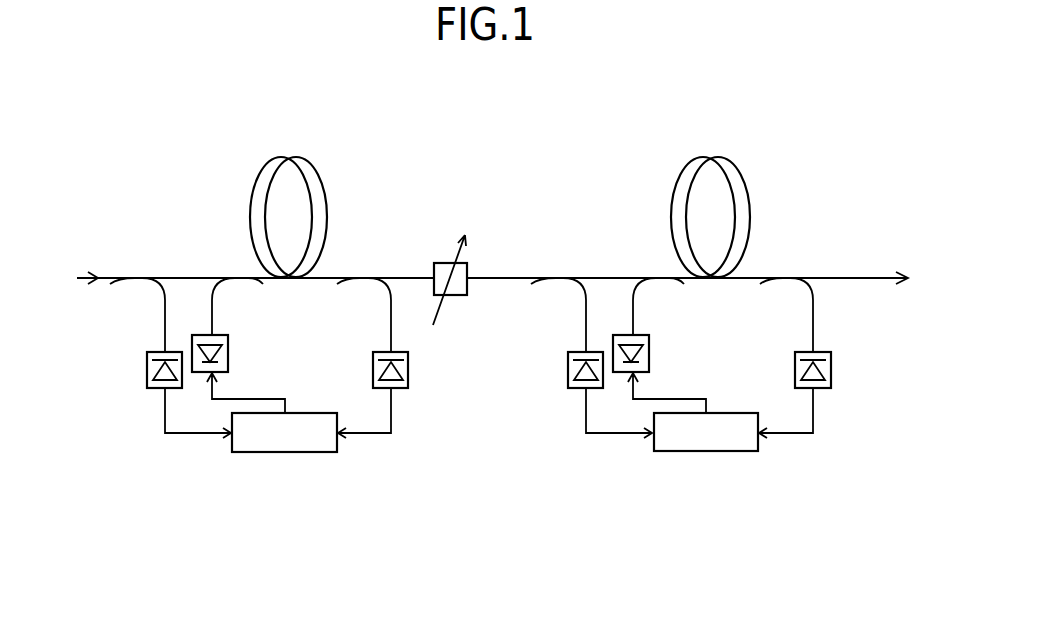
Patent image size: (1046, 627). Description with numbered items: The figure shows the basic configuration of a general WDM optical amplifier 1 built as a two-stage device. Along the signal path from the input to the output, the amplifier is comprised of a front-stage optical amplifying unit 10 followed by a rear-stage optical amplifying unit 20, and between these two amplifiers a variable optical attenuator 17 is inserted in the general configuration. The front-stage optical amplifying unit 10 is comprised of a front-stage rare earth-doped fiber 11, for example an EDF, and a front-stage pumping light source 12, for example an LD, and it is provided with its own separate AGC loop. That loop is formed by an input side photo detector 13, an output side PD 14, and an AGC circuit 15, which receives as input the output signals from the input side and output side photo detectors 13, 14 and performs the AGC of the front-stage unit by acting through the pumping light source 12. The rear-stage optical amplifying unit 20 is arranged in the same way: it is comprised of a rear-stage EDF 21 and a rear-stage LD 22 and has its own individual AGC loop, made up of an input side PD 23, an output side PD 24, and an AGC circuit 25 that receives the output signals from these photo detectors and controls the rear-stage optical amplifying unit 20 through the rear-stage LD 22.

The WDM optical amplifier 1 is at (527, 125).
The front-stage optical amplifying unit 10 is at (369, 162).
The front-stage rare earth-doped fiber 11 is at (279, 187).
The front-stage pumping light source 12 is at (226, 337).
The input side photo detector 13 is at (152, 388).
The output side PD 14 is at (400, 388).
The AGC circuit 15 is at (285, 452).
The variable optical attenuator 17 is at (457, 295).
The rear-stage optical amplifying unit 20 is at (632, 166).
The rear-stage EDF 21 is at (716, 182).
The rear-stage LD 22 is at (659, 359).
The input side PD 23 is at (589, 395).
The output side PD 24 is at (813, 397).
The AGC circuit 25 is at (706, 458).